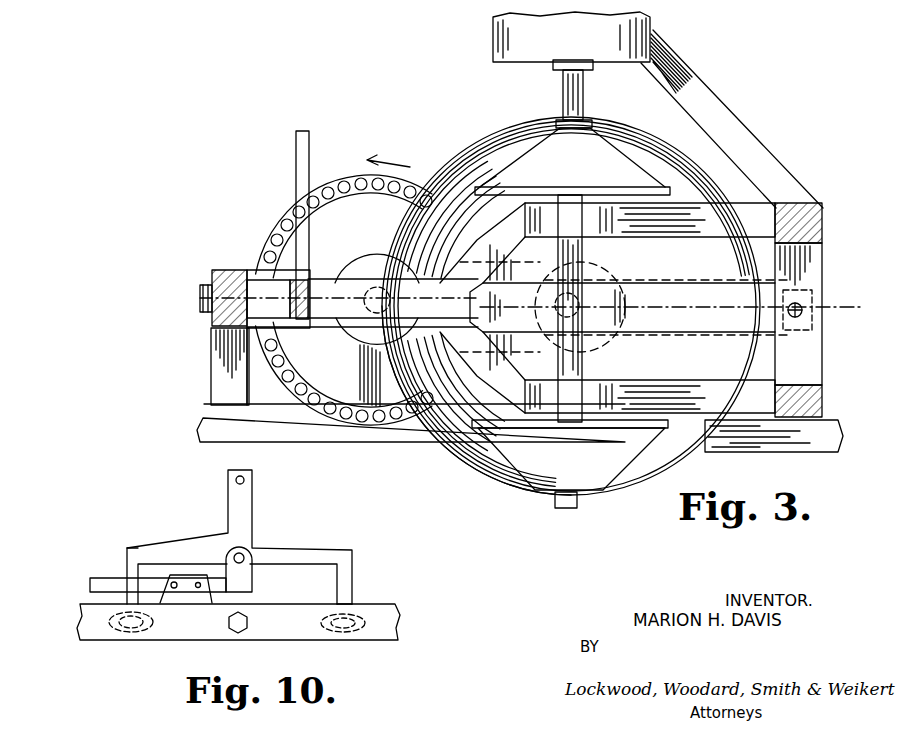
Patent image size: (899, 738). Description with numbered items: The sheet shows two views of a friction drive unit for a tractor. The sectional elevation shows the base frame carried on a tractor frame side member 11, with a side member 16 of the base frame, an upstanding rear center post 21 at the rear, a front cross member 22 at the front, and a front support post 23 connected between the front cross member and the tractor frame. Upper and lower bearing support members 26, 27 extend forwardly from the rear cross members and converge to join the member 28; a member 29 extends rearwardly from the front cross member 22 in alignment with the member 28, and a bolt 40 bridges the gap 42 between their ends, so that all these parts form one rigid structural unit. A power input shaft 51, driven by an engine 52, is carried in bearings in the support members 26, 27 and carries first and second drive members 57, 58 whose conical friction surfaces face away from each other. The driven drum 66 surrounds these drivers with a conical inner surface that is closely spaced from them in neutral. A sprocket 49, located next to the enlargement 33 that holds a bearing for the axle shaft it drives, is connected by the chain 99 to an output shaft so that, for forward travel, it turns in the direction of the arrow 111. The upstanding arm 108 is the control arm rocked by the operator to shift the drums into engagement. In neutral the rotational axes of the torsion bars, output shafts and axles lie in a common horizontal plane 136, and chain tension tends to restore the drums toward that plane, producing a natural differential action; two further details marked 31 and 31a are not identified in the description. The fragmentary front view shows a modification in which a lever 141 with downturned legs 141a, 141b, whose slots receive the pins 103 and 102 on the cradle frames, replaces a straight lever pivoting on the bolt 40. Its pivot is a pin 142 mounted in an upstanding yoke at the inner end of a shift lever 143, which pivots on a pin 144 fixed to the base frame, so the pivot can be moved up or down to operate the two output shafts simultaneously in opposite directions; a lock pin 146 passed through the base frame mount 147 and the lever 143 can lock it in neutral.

In FIG. 3, the tractor frame side member 11 is at (298, 436).
In FIG. 3, the side member 16 is at (258, 366).
In FIG. 3, the rear center post 21 is at (822, 263).
In FIG. 10, the front cross member 22 is at (290, 640).
In FIG. 3, the front support post 23 is at (218, 367).
In FIG. 3, the upper bearing support member 26 is at (737, 215).
In FIG. 3, the lower bearing support member 27 is at (740, 418).
In FIG. 3, the member 28 is at (372, 338).
In FIG. 3, the member 29 is at (258, 276).
In FIG. 3, the drum rim 31 is at (418, 420).
In FIG. 3, the drum flange 31a is at (368, 366).
In FIG. 3, the enlargement 33 is at (358, 330).
In FIG. 3, the bolt 40 is at (200, 298).
In FIG. 10, the bolt 40 is at (248, 623).
In FIG. 3, the gap 42 is at (322, 266).
In FIG. 3, the sprocket 49 is at (372, 225).
In FIG. 3, the power input shaft 51 is at (563, 90).
In FIG. 3, the engine 52 is at (658, 110).
In FIG. 3, the first drive member 57 is at (580, 161).
In FIG. 3, the second drive member 58 is at (578, 459).
In FIG. 3, the second driven member 66 is at (488, 137).
In FIG. 3, the chain 99 is at (332, 183).
In FIG. 3, the upstanding arm 108 is at (296, 143).
In FIG. 3, the arrow 111 is at (393, 153).
In FIG. 3, the common horizontal plane 136 is at (841, 316).
In FIG. 10, the pin 102 is at (355, 635).
In FIG. 10, the pin 103 is at (120, 632).
In FIG. 10, the lever 141 is at (272, 548).
In FIG. 10, the downturned leg 141a is at (130, 565).
In FIG. 10, the downturned leg 141b is at (352, 580).
In FIG. 10, the pin 142 is at (243, 555).
In FIG. 10, the shift lever 143 is at (97, 578).
In FIG. 10, the pin 144 is at (174, 582).
In FIG. 10, the lock pin 146 is at (198, 590).
In FIG. 10, the base frame mount 147 is at (240, 596).